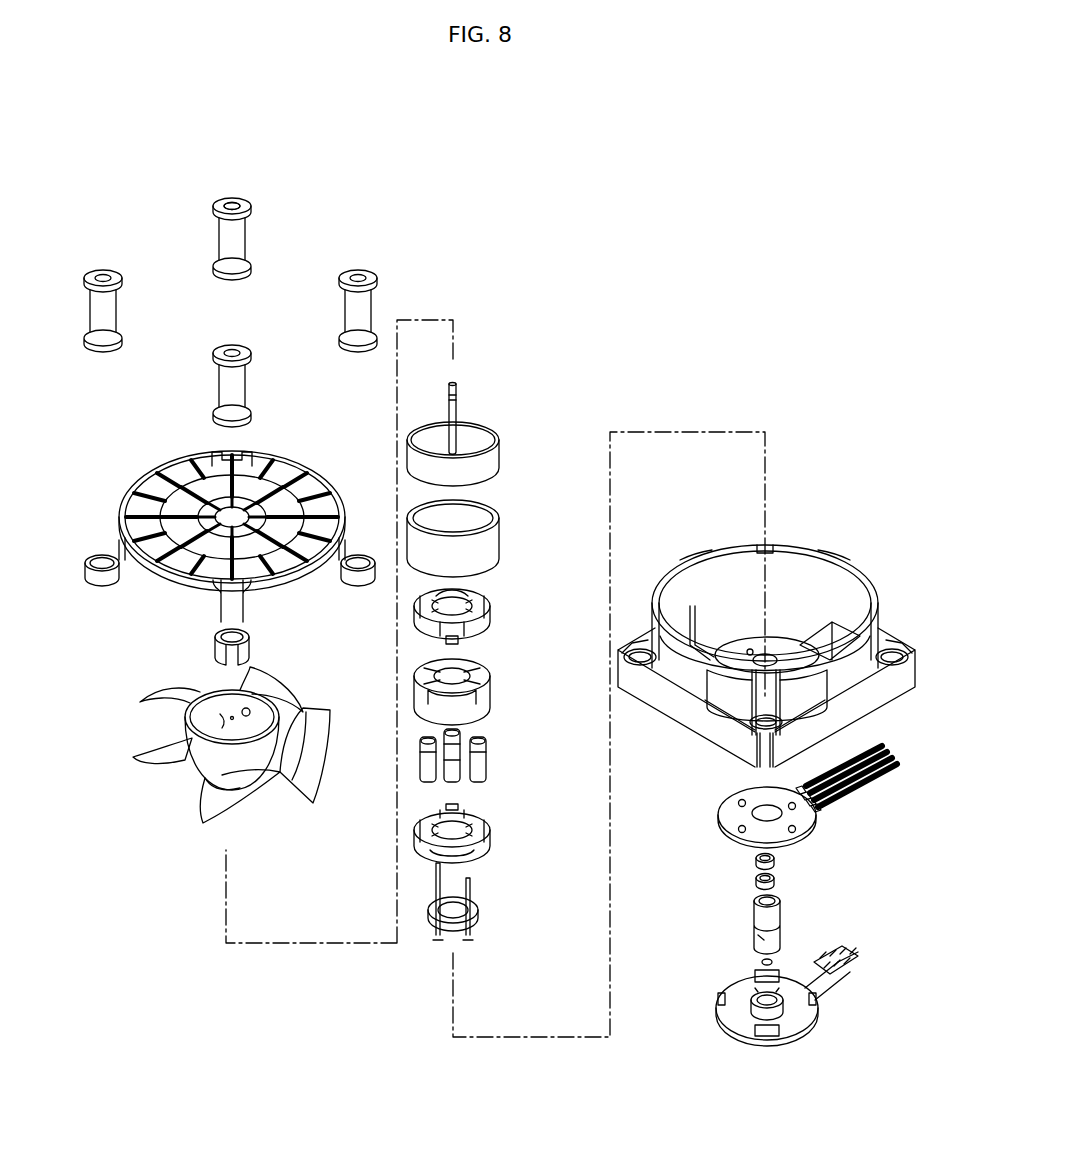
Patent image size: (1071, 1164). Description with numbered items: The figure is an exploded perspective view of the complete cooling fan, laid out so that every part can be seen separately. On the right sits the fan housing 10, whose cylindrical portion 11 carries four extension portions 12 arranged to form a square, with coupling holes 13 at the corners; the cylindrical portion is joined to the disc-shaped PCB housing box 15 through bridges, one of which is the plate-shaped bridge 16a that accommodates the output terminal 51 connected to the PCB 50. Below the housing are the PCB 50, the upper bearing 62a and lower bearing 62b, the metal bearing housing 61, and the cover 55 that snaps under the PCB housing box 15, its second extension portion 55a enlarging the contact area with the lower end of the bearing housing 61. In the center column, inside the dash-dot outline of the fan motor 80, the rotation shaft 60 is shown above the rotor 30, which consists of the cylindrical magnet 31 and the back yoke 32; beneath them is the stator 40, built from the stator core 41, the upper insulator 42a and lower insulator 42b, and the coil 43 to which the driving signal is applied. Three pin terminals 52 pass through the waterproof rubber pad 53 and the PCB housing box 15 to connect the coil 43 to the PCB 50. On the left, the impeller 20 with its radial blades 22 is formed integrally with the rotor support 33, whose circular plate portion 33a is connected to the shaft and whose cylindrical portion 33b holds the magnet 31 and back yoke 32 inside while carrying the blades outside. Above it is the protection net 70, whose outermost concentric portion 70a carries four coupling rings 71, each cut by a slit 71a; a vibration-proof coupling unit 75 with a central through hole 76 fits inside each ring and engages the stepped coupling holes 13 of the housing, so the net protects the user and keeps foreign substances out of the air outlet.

The fan housing 10 is at (788, 636).
The cylindrical portion 11 is at (800, 692).
The extension portions 12 is at (748, 748).
The coupling holes 13 is at (778, 740).
The PCB housing box 15 is at (700, 650).
The plate-shaped bridge 16a is at (833, 636).
The impeller 20 is at (186, 743).
The blades 22 is at (158, 700).
The rotor 30 is at (500, 499).
The magnet 31 is at (494, 456).
The back yoke 32 is at (478, 538).
The rotor support 33 is at (186, 748).
The circular plate portion 33a is at (162, 751).
The cylindrical portion 33b is at (240, 796).
The stator 40 is at (508, 726).
The stator core 41 is at (494, 684).
The upper insulator 42a is at (492, 607).
The lower insulator 42b is at (489, 833).
The coil 43 is at (490, 760).
The PCB 50 is at (800, 822).
The output terminal 51 is at (872, 776).
The pin terminals 52 is at (472, 880).
The waterproof rubber pad 53 is at (479, 915).
The cover 55 is at (771, 1011).
The second extension portion 55a is at (757, 998).
The rotation shaft 60 is at (459, 389).
The bearing housing 61 is at (780, 912).
The upper bearing 62a is at (755, 862).
The lower bearing 62b is at (755, 880).
The protection net 70 is at (209, 524).
The outermost concentric portion 70a is at (178, 456).
The coupling rings 71 is at (100, 585).
The slit 71a is at (212, 640).
The vibration-proof coupling unit 75 is at (246, 242).
The through hole 76 is at (240, 203).
The fan motor 80 is at (526, 346).